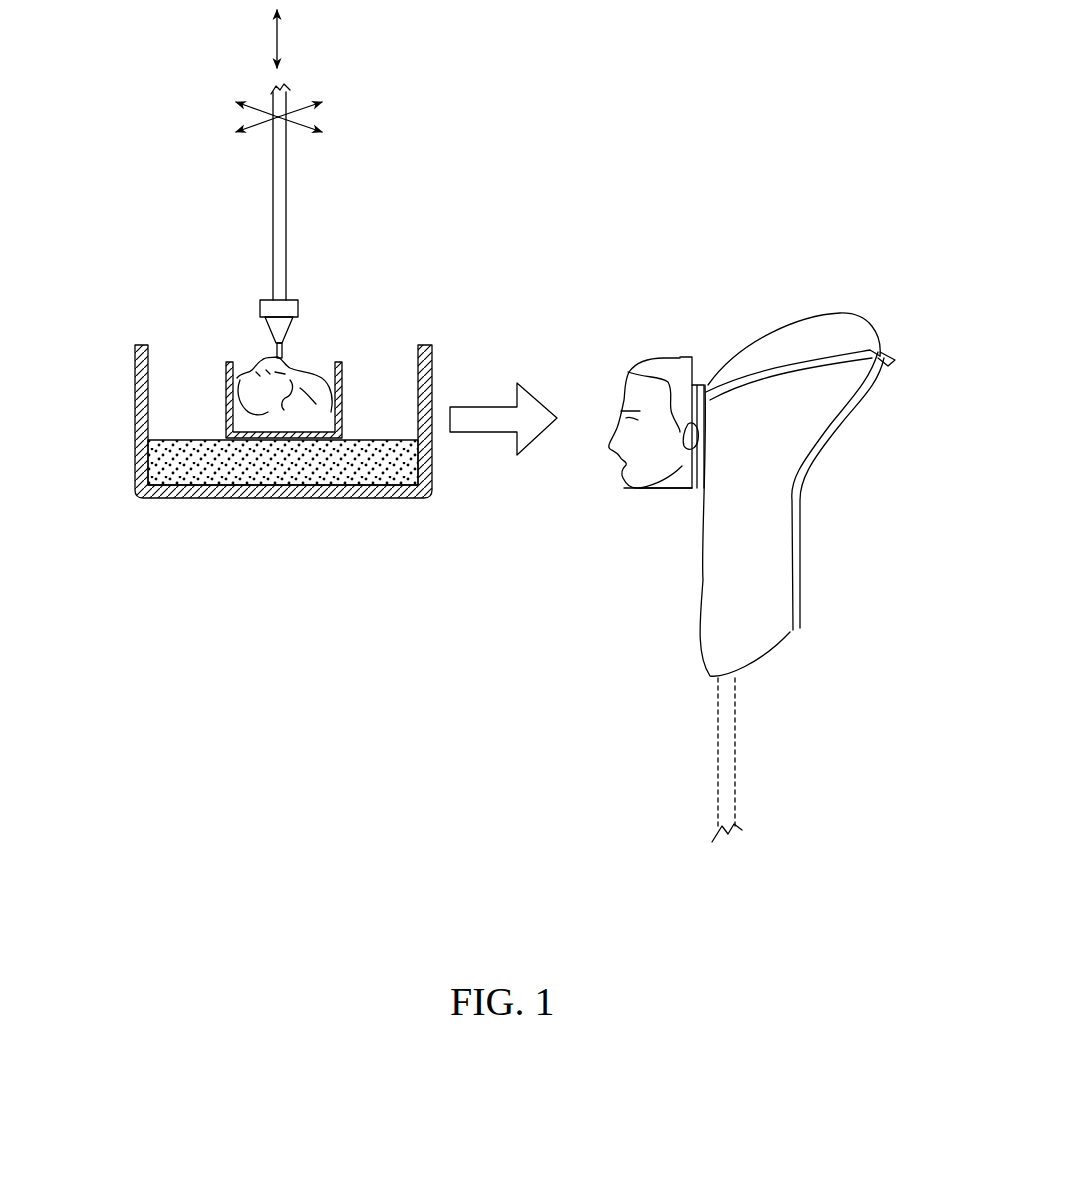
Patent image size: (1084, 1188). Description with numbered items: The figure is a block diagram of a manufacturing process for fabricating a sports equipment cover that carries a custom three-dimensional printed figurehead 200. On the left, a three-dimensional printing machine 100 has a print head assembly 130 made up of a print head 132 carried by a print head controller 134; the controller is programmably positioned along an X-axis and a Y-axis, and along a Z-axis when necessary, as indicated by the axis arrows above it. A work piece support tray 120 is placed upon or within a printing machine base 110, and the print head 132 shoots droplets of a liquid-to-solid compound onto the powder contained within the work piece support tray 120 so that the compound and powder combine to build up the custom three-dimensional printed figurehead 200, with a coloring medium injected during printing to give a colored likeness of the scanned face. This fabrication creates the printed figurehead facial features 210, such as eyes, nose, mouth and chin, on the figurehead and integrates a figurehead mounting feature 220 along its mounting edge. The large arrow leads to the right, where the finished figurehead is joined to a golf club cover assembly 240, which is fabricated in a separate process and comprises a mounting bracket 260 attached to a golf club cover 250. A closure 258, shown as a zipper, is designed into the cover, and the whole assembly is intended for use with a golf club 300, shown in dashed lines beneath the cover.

The three-dimensional printing machine 100 is at (152, 283).
The printing machine base 110 is at (135, 490).
The work piece support tray 120 is at (228, 398).
The print head assembly 130 is at (322, 206).
The print head 132 is at (277, 353).
The print head controller 134 is at (273, 190).
The custom three-dimensional printed figurehead 200 is at (267, 412).
The printed figurehead facial features 210 is at (315, 362).
The figurehead mounting feature 220 is at (687, 388).
The golf club cover assembly 240 is at (670, 638).
The golf club cover 250 is at (702, 567).
The closure 258 is at (888, 355).
The mounting bracket 260 is at (709, 385).
The golf club 300 is at (718, 752).